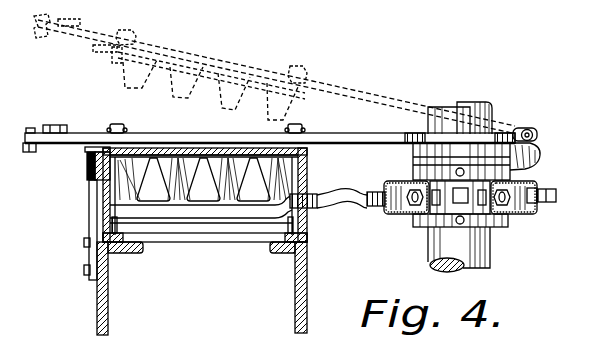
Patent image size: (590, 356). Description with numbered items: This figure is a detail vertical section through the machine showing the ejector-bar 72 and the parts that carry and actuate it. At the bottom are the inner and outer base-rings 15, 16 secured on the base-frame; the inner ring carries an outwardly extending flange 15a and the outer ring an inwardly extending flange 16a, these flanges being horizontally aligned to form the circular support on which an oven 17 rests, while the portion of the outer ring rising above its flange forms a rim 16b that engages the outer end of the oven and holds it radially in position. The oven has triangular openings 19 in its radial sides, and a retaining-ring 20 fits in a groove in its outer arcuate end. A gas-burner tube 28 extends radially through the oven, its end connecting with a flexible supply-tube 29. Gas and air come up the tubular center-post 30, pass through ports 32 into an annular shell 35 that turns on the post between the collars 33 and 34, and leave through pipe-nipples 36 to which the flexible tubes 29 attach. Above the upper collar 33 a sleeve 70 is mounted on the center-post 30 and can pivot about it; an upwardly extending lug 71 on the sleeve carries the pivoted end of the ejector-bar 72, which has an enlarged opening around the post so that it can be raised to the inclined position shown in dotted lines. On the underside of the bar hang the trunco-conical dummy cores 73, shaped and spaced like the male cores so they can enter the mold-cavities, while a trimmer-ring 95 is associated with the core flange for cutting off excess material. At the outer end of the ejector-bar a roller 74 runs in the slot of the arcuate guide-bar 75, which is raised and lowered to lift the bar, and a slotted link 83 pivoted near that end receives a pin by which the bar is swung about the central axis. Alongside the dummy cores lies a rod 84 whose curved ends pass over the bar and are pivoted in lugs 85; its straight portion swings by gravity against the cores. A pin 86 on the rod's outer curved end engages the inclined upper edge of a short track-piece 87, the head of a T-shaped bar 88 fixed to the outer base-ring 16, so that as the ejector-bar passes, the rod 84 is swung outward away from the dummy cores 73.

The inner base-ring 15 is at (297, 317).
The outwardly extending flange 15a is at (278, 254).
The outer base-ring 16 is at (96, 325).
The inwardly extending flange 16a is at (128, 254).
The rim 16b is at (89, 259).
The oven 17 is at (160, 148).
The triangular openings 19 is at (204, 179).
The retaining-ring 20 is at (92, 186).
The tube 28 is at (171, 224).
The flexible supply-tubes 29 is at (339, 209).
The tubular center-post 30 is at (445, 255).
The ports 32 is at (458, 203).
The collar 33 is at (426, 172).
The collar 34 is at (498, 228).
The annular shell 35 is at (530, 214).
The pipe-nipples 36 is at (381, 210).
The sleeve 70 is at (420, 150).
The lug 71 is at (524, 152).
The ejector-bar 72 is at (192, 56).
The dummy cores 73 is at (137, 71).
The roller 74 is at (26, 149).
The guide-bar 75 is at (29, 131).
The slotted link 83 is at (62, 132).
The rod 84 is at (212, 82).
The lugs 85 is at (131, 32).
The pin 86 is at (88, 150).
The track-piece 87 is at (92, 156).
The T-shaped bar 88 is at (89, 228).
The trimmer-ring 95 is at (230, 150).